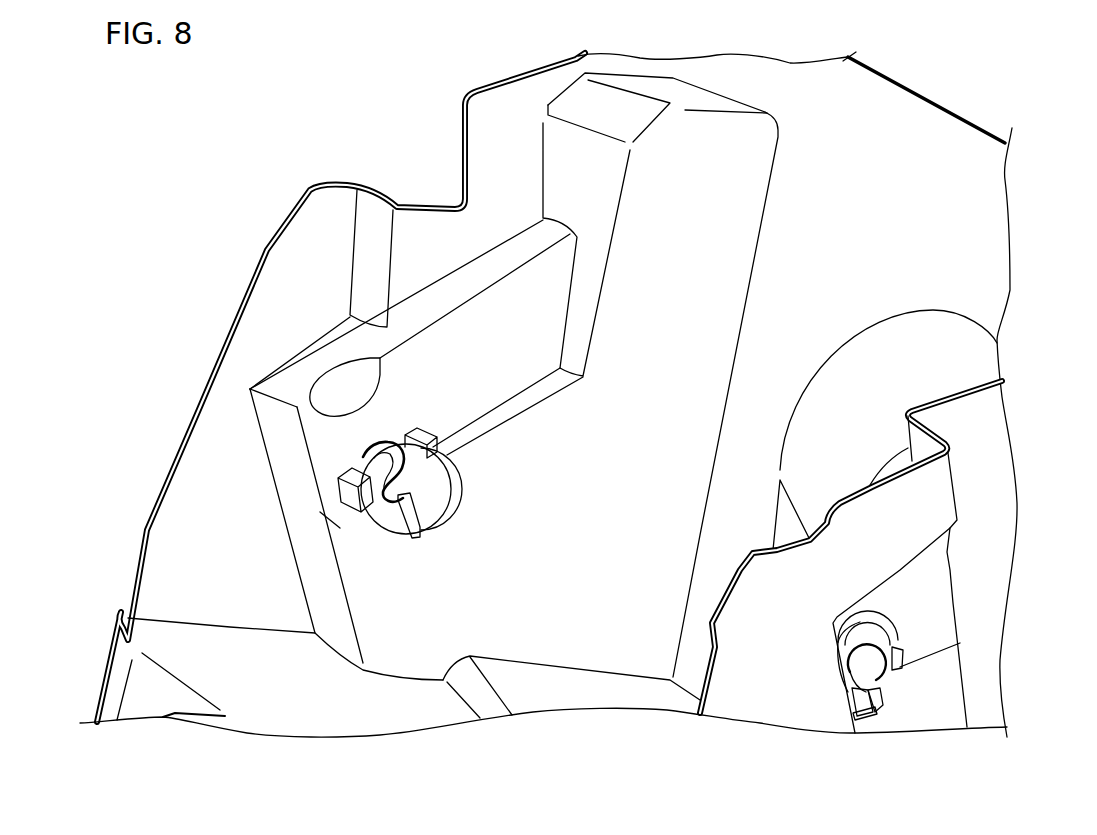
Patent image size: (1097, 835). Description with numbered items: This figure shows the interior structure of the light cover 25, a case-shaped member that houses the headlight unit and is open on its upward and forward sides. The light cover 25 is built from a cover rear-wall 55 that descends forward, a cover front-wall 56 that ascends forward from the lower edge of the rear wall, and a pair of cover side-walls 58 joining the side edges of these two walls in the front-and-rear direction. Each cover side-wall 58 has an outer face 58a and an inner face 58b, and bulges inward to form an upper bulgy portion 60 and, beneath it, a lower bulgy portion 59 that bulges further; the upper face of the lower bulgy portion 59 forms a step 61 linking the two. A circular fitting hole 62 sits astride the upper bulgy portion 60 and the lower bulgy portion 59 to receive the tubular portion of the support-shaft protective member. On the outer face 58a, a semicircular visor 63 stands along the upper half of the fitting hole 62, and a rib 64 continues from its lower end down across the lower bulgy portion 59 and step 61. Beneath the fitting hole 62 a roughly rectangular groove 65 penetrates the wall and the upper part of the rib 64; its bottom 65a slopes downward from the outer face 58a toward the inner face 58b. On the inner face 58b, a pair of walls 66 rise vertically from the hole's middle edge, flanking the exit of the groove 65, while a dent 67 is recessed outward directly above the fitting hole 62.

The light cover 25 is at (283, 213).
The cover rear-wall 55 is at (950, 140).
The cover front-wall 56 is at (363, 697).
The cover side-wall 58 is at (990, 760).
The outer face 58a is at (980, 693).
The inner face 58b is at (480, 570).
The lower bulgy portion 59 is at (520, 523).
The upper bulgy portion 60 is at (440, 363).
The step 61 is at (503, 415).
The fitting hole 62 is at (362, 460).
The visor 63 is at (877, 623).
The rib 64 is at (870, 713).
The groove 65 is at (397, 505).
The bottom 65a is at (410, 527).
The wall 66 is at (340, 500).
The dent 67 is at (337, 382).